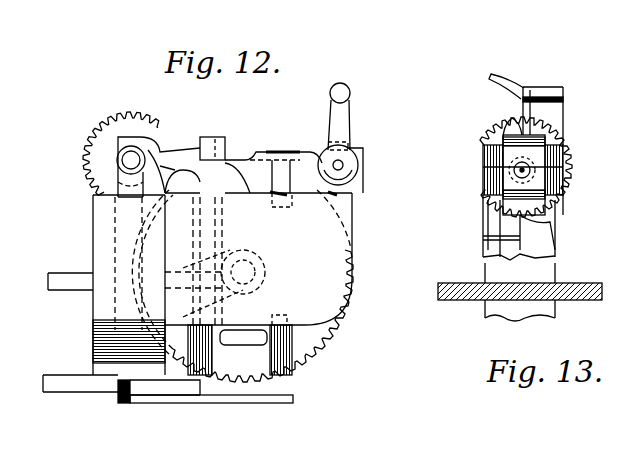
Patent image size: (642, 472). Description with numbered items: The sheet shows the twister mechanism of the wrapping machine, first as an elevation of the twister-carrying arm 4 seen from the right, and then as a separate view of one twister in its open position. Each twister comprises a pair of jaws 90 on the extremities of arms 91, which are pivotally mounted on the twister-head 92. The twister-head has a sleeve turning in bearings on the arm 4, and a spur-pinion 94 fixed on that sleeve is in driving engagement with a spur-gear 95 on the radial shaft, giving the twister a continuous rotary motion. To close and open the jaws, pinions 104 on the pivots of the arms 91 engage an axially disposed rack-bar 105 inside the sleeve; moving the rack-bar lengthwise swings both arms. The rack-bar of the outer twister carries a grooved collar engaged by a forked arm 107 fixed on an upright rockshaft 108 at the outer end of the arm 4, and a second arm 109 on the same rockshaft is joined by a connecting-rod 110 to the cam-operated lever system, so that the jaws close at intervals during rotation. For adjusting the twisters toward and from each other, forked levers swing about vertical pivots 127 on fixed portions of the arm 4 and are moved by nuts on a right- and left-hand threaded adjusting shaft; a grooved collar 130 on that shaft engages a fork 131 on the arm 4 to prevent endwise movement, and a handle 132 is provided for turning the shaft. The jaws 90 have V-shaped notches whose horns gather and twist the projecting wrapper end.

In FIG. 12, the arm 4 is at (93, 233).
In FIG. 13, the arm 4 is at (585, 283).
In FIG. 13, the jaw 90 is at (560, 87).
In FIG. 13, the arm 91 is at (564, 123).
In FIG. 13, the twister-head 92 is at (503, 167).
In FIG. 12, the spur-pinion 94 is at (103, 122).
In FIG. 13, the spur-pinion 94 is at (571, 152).
In FIG. 12, the spur-gear 95 is at (330, 342).
In FIG. 13, the pinion 104 is at (505, 128).
In FIG. 12, the rack-bar 105 is at (120, 162).
In FIG. 12, the forked arm 107 is at (178, 142).
In FIG. 12, the rockshaft 108 is at (225, 137).
In FIG. 12, the second arm 109 is at (175, 387).
In FIG. 12, the connecting-rod 110 is at (238, 403).
In FIG. 12, the pivot 127 is at (280, 152).
In FIG. 12, the grooved collar 130 is at (356, 165).
In FIG. 12, the fork 131 is at (356, 148).
In FIG. 12, the handle 132 is at (344, 112).